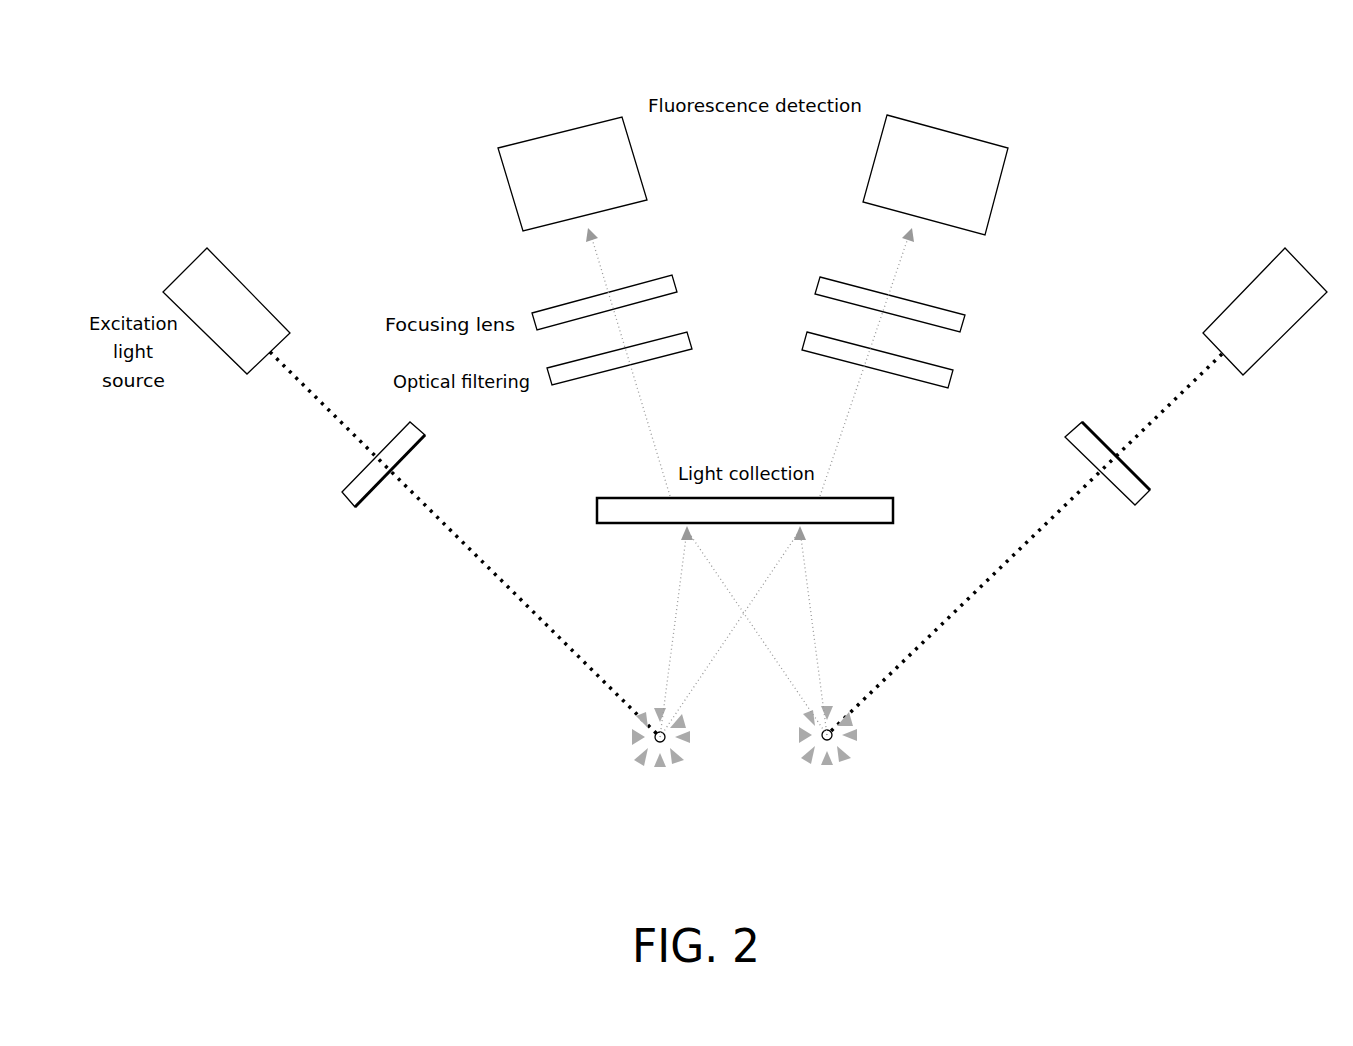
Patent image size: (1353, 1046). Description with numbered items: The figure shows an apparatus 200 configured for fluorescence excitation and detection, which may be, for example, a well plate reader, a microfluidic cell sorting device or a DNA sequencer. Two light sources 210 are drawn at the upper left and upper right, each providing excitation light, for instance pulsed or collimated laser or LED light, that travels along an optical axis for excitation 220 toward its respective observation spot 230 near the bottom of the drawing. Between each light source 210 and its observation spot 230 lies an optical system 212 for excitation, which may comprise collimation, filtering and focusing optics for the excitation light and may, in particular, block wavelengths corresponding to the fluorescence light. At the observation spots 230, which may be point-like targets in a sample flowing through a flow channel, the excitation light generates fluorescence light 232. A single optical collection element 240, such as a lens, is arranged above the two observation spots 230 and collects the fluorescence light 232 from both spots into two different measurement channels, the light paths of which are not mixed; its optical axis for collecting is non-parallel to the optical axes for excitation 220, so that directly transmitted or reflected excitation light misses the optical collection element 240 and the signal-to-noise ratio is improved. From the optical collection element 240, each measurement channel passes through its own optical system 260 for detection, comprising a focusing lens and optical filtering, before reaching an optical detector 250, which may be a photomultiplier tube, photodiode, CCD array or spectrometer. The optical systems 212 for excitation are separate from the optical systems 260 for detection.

The apparatus 200 is at (1250, 131).
The light source 210 is at (178, 274).
The optical system for excitation 212 is at (343, 495).
The optical axis for excitation 220 is at (624, 727).
The observation spot 230 is at (657, 744).
The fluorescence light 232 is at (765, 588).
The optical collection element 240 is at (620, 523).
The optical detector 250 is at (512, 144).
The optical system for detection 260 is at (810, 313).